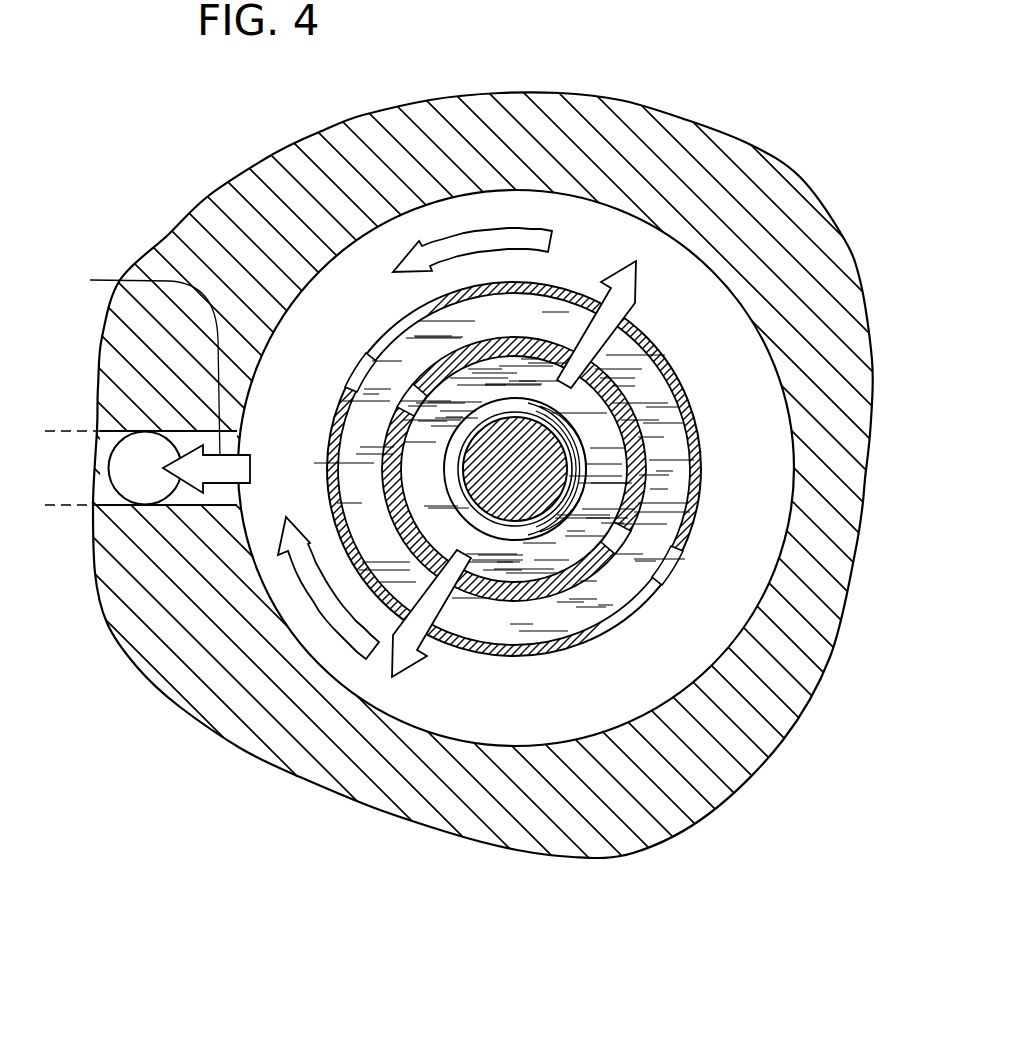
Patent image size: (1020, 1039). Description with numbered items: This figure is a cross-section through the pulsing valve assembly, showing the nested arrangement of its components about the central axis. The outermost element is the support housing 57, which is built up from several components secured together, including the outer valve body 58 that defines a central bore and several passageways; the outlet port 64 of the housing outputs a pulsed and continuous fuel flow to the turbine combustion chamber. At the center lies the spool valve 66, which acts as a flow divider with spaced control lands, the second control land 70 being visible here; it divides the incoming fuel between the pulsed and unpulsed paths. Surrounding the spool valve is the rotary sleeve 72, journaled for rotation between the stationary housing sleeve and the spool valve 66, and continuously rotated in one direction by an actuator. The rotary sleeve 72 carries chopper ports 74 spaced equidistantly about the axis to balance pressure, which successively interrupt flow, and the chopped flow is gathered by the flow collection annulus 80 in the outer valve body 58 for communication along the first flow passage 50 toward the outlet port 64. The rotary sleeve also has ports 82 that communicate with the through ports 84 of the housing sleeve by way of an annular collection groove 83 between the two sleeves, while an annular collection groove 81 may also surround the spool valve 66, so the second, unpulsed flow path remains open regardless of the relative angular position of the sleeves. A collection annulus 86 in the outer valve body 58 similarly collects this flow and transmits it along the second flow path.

The first flow passage 50 is at (146, 385).
The support housing 57 is at (207, 186).
The outer valve body 58 is at (317, 147).
The outlet port 64 is at (72, 468).
The spool valve 66 is at (690, 397).
The second control land 70 is at (527, 407).
The rotary sleeve 72 is at (398, 318).
The chopper ports 74 is at (628, 283).
The flow collection annulus 80 is at (670, 294).
The annular collection groove 81 is at (530, 567).
The ports of the rotary sleeve 82 is at (660, 583).
The annular collection groove 83 is at (640, 393).
The through ports 84 is at (632, 320).
The collection annulus 86 is at (723, 520).